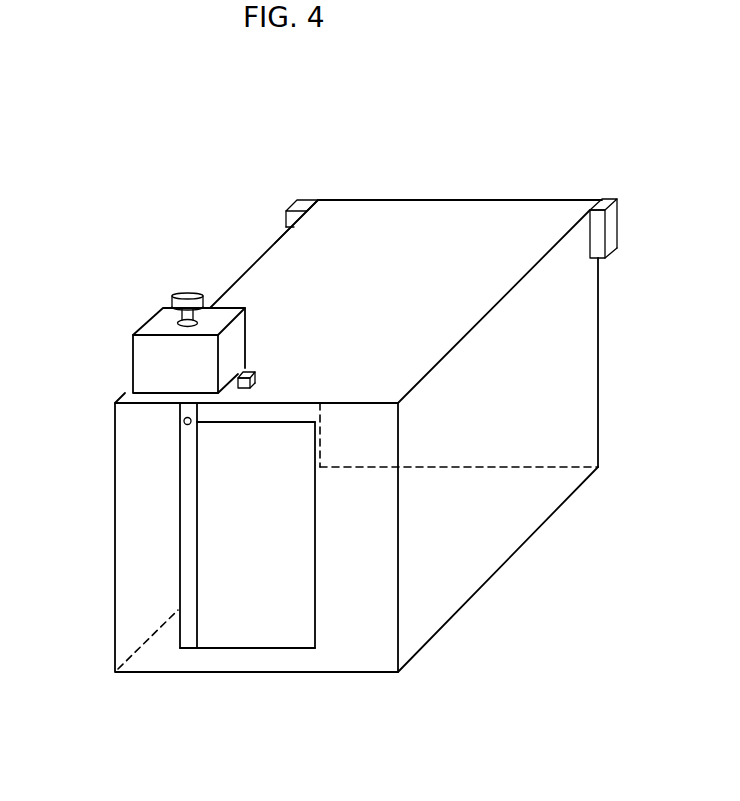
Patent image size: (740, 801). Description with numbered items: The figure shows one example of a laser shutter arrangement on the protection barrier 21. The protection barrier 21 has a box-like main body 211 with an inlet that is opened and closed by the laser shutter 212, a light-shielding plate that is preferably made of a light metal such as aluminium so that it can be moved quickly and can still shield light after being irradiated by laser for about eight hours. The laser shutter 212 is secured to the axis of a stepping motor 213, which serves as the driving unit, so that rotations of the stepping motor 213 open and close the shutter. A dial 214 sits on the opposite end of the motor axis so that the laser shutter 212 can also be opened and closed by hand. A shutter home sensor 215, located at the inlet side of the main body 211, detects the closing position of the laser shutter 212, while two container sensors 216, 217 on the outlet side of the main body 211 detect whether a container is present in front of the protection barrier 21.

The protection barrier 21 is at (161, 110).
The main body 211 is at (505, 530).
The laser shutter 212 is at (238, 635).
The stepping motor 213 is at (142, 366).
The dial 214 is at (190, 292).
The shutter home sensor 215 is at (254, 375).
The container sensor 216 is at (307, 197).
The container sensor 217 is at (610, 198).